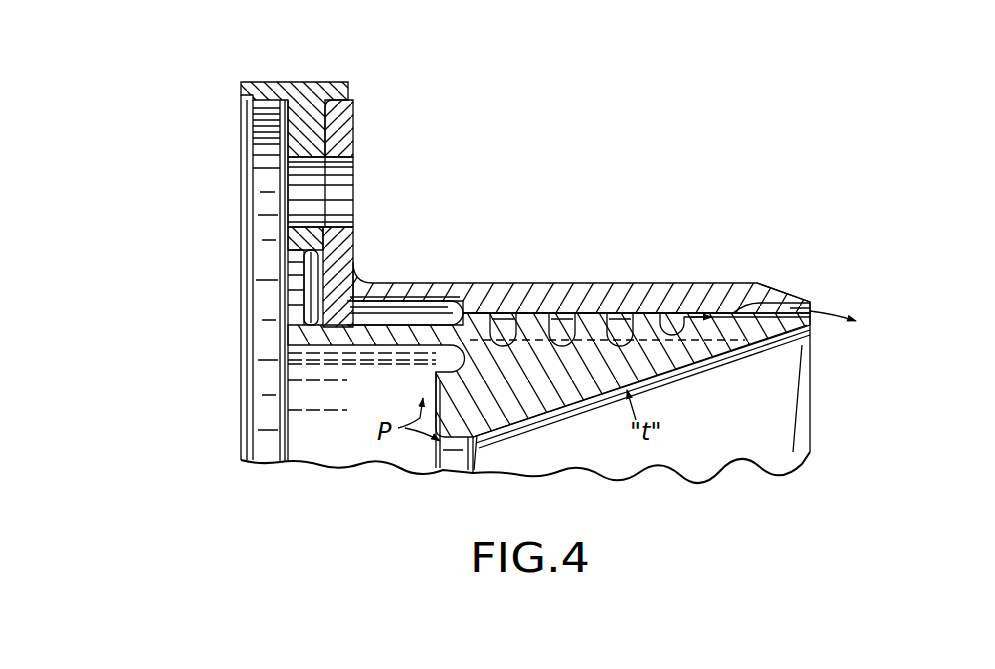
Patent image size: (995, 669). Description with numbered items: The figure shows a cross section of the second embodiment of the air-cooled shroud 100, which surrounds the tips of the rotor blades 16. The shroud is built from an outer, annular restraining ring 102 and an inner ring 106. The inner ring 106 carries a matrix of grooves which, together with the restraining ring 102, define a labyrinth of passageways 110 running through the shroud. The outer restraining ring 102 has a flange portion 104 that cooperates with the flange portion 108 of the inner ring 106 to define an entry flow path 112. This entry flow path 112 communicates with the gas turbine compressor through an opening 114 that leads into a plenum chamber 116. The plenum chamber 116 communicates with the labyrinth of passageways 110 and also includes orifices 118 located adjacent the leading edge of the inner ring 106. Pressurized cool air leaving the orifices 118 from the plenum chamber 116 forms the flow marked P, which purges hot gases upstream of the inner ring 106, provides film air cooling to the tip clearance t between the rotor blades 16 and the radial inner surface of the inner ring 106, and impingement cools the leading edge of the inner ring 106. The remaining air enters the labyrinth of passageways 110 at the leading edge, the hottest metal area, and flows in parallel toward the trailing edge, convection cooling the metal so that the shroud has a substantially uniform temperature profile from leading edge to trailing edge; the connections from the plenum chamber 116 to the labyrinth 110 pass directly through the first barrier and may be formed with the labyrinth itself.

The air-cooled shroud 100 is at (695, 256).
The outer annular restraining ring 102 is at (603, 280).
The flange portion 104 is at (356, 131).
The inner ring 106 is at (801, 342).
The flange portion 108 is at (312, 90).
The labyrinth of passageways 110 is at (562, 310).
The entry flow path 112 is at (370, 300).
The opening 114 is at (332, 302).
The plenum chamber 116 is at (394, 306).
The orifices 118 is at (434, 357).
The rotor blades 16 is at (710, 464).